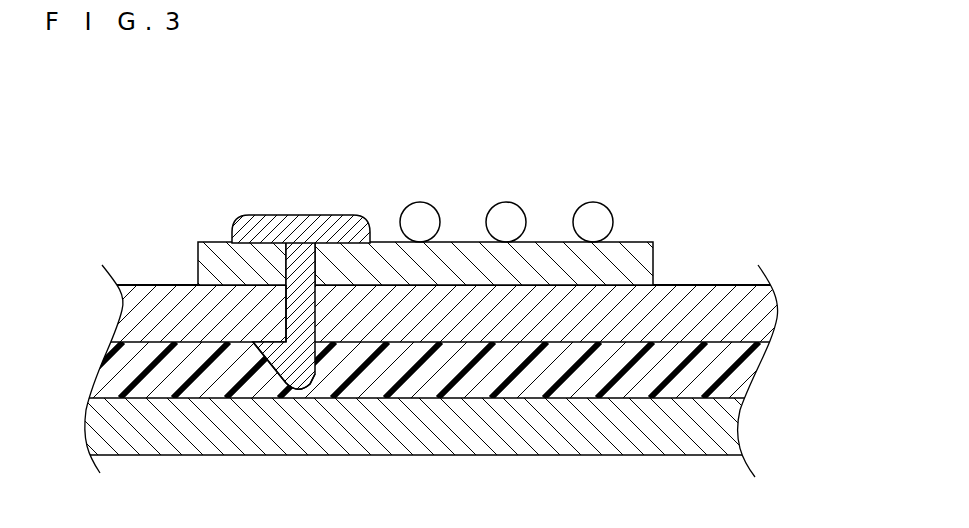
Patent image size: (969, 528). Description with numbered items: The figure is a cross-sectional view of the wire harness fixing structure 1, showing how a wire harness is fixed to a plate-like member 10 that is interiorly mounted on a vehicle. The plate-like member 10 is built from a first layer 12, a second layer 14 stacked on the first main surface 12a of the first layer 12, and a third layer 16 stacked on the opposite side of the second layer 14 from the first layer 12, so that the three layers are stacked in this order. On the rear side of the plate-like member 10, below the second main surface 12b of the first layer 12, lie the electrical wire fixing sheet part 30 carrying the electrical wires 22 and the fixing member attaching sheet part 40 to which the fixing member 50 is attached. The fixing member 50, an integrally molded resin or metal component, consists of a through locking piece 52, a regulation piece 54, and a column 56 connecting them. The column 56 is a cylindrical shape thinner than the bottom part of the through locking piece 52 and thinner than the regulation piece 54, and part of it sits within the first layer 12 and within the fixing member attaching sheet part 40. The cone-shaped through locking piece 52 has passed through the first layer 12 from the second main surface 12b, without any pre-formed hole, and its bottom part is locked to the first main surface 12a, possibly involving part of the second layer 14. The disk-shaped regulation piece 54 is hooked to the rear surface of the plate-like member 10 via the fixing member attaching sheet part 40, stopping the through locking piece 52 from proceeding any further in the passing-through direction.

The wire harness fixing structure 1 is at (123, 132).
The plate-like member 10 is at (728, 283).
The first layer 12 is at (768, 318).
The first main surface 12a is at (615, 343).
The second main surface 12b is at (682, 284).
The second layer 14 is at (743, 381).
The third layer 16 is at (732, 428).
The electrical wires 22 is at (595, 209).
The electrical wire fixing sheet part 30 is at (540, 253).
The fixing member attaching sheet part 40 is at (285, 268).
The fixing member 50 is at (338, 213).
The through locking piece 52 is at (290, 389).
The regulation piece 54 is at (263, 215).
The column 56 is at (287, 308).